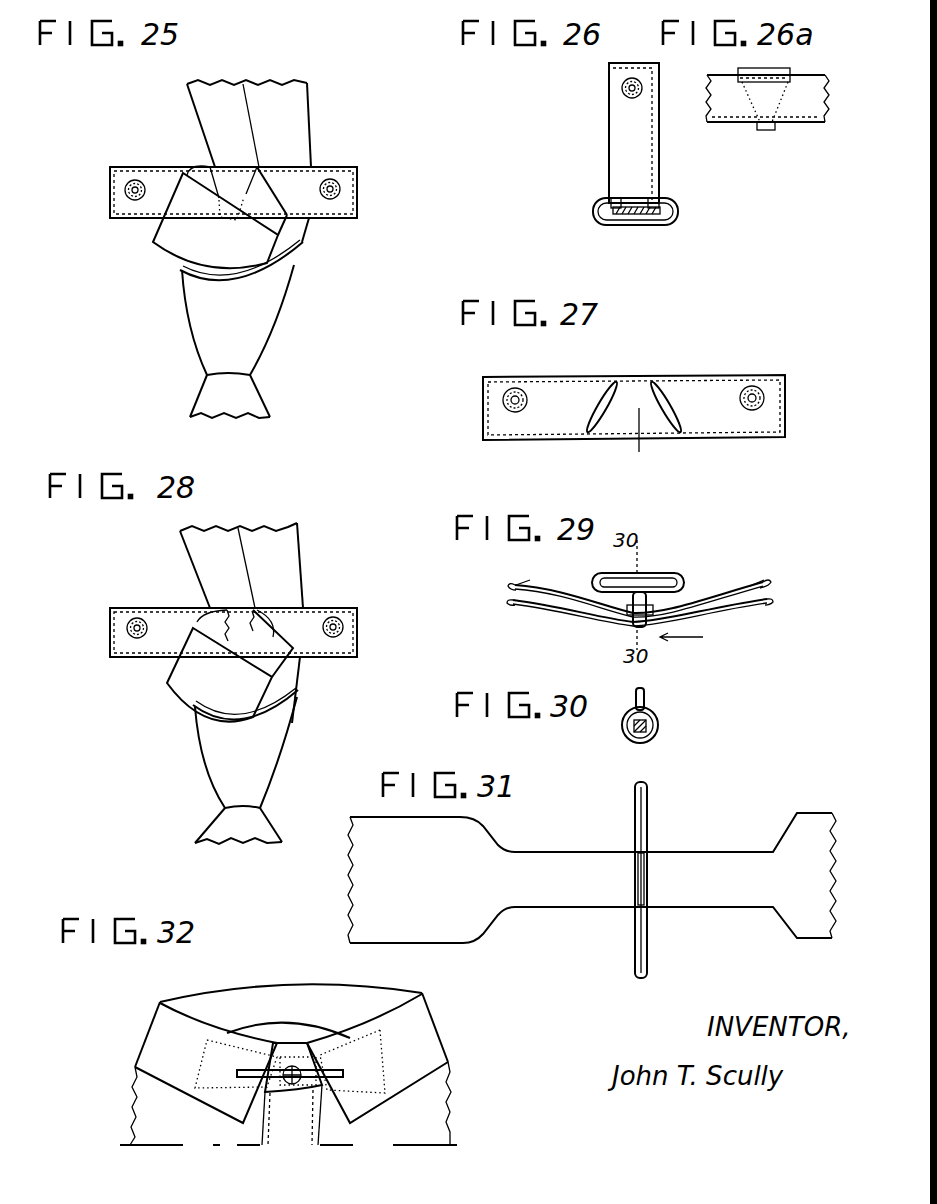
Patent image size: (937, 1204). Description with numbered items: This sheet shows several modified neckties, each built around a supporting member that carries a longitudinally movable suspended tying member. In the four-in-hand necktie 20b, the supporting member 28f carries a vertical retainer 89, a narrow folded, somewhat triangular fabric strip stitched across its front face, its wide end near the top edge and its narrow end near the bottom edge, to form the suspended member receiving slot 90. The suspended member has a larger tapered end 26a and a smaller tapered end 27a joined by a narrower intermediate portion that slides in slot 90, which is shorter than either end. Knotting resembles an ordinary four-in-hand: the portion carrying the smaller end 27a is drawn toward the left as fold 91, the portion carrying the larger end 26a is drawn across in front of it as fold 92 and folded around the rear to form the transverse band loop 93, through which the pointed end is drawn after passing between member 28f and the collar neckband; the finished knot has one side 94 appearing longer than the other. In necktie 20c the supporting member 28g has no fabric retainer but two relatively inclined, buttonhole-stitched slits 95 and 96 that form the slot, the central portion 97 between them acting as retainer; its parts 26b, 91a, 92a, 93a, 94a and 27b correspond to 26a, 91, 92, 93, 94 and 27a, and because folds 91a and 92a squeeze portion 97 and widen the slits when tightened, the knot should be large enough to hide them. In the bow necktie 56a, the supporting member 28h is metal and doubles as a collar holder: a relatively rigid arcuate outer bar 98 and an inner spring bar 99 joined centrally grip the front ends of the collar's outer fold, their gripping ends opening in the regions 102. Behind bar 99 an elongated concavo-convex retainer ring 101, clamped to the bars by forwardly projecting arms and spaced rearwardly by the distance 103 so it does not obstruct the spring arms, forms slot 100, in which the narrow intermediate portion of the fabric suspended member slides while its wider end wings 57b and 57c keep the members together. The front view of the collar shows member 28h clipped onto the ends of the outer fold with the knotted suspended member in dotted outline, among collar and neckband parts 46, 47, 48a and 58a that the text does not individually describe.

In FIG. 25, the four-in-hand necktie 20b is at (220, 329).
In FIG. 28, the four-in-hand necktie 20c is at (242, 766).
In FIG. 25, the larger tapered end 26a is at (308, 100).
In FIG. 28, the larger tapered end 26b is at (297, 530).
In FIG. 25, the smaller tapered end 27a is at (267, 401).
In FIG. 28, the smaller tapered end 27b is at (210, 822).
In FIG. 25, the supporting member 28f is at (358, 192).
In FIG. 26, the supporting member 28f is at (617, 123).
In FIG. 26A, the supporting member 28f is at (717, 124).
In FIG. 27, the supporting member 28g is at (770, 377).
In FIG. 28, the supporting member 28g is at (338, 607).
In FIG. 29, the supporting member 28h is at (670, 587).
In FIG. 31, the supporting member 28h is at (655, 866).
In FIG. 32, the supporting member 28h is at (353, 1075).
In FIG. 25, the vertical retainer 89 is at (233, 163).
In FIG. 26, the vertical retainer 89 is at (597, 209).
In FIG. 26A, the vertical retainer 89 is at (772, 130).
In FIG. 26, the suspended member receiving slot 90 is at (657, 217).
In FIG. 25, the fold 91 is at (248, 201).
In FIG. 28, the fold 91a is at (273, 643).
In FIG. 25, the fold 92 is at (215, 220).
In FIG. 28, the fold 92a is at (219, 675).
In FIG. 25, the transverse band loop 93 is at (238, 320).
In FIG. 28, the transverse band loop 93a is at (246, 752).
In FIG. 25, the side of knot 94 is at (295, 290).
In FIG. 28, the side of knot 94a is at (295, 733).
In FIG. 27, the slit 95 is at (605, 395).
In FIG. 27, the slit 96 is at (663, 395).
In FIG. 27, the central portion 97 is at (644, 447).
In FIG. 28, the central portion 97 is at (235, 629).
In FIG. 29, the outer bar 98 is at (750, 607).
In FIG. 30, the outer bar 98 is at (653, 733).
In FIG. 31, the outer bar 98 is at (648, 800).
In FIG. 29, the spring bar 99 is at (727, 590).
In FIG. 30, the spring bar 99 is at (658, 717).
In FIG. 31, the spring bar 99 is at (642, 812).
In FIG. 29, the slot 100 is at (680, 573).
In FIG. 29, the retainer ring 101 is at (648, 575).
In FIG. 30, the retainer ring 101 is at (645, 700).
In FIG. 31, the retainer ring 101 is at (647, 875).
In FIG. 29, the gripping regions 102 is at (765, 587).
In FIG. 29, the spacing 103 is at (593, 593).
In FIG. 32, the shirt 46 is at (130, 1108).
In FIG. 32, the collar 47 is at (253, 980).
In FIG. 32, the collar points 48a is at (140, 1053).
In FIG. 31, the bow necktie 56a is at (487, 930).
In FIG. 32, the bow necktie 56a is at (190, 1048).
In FIG. 31, the end wing 57b is at (590, 878).
In FIG. 31, the end wing 57c is at (807, 812).
In FIG. 31, the neck band 58a is at (693, 906).